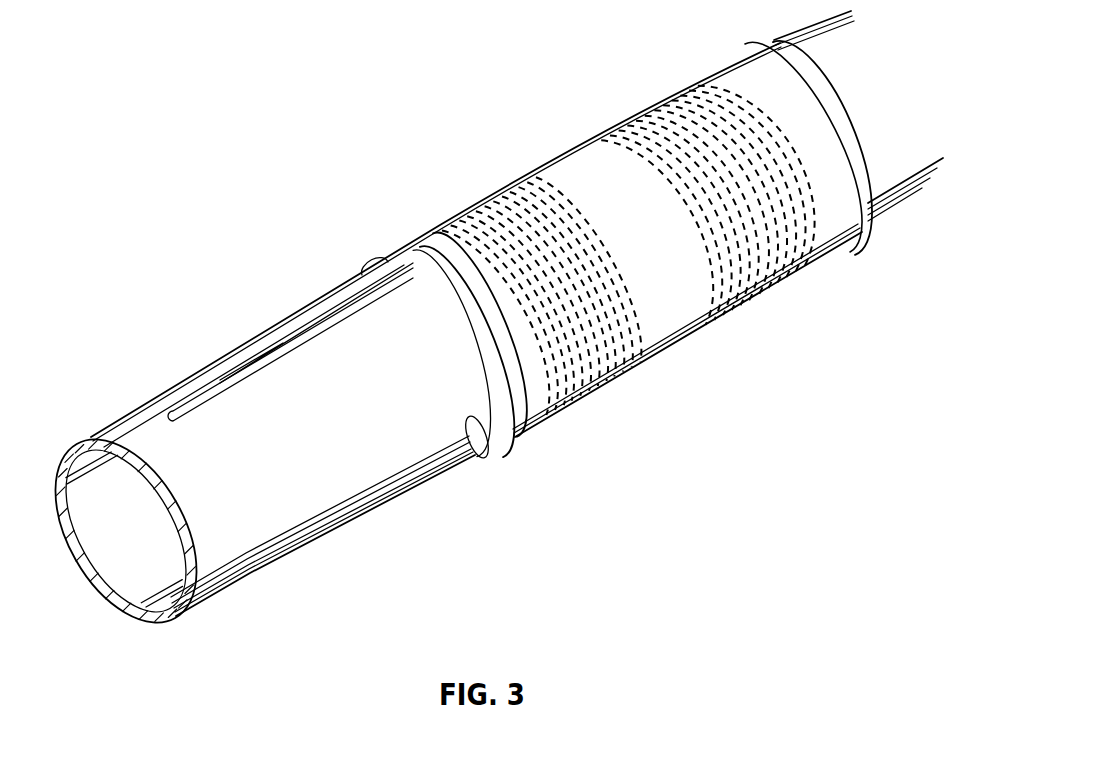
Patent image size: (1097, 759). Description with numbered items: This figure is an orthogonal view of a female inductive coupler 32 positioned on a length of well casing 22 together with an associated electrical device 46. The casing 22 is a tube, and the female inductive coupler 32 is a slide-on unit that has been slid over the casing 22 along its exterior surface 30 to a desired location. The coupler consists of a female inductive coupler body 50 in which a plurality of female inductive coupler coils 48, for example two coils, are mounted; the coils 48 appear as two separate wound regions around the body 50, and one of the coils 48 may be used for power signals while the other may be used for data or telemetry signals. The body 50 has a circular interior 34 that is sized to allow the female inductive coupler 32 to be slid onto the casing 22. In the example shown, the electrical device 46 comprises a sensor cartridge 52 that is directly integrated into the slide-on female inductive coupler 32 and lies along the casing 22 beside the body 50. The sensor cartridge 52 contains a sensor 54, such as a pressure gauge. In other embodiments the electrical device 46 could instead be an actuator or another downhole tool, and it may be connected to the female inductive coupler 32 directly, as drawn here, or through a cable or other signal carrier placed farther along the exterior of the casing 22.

The well casing 22 is at (306, 455).
The exterior surface 30 is at (270, 528).
The female inductive coupler 32 is at (535, 160).
The circular interior 34 is at (475, 456).
The electrical device 46 is at (194, 388).
The female inductive coupler coils 48 is at (612, 349).
The female inductive coupler body 50 is at (420, 262).
The sensor cartridge 52 is at (378, 268).
The sensor 54 is at (280, 350).